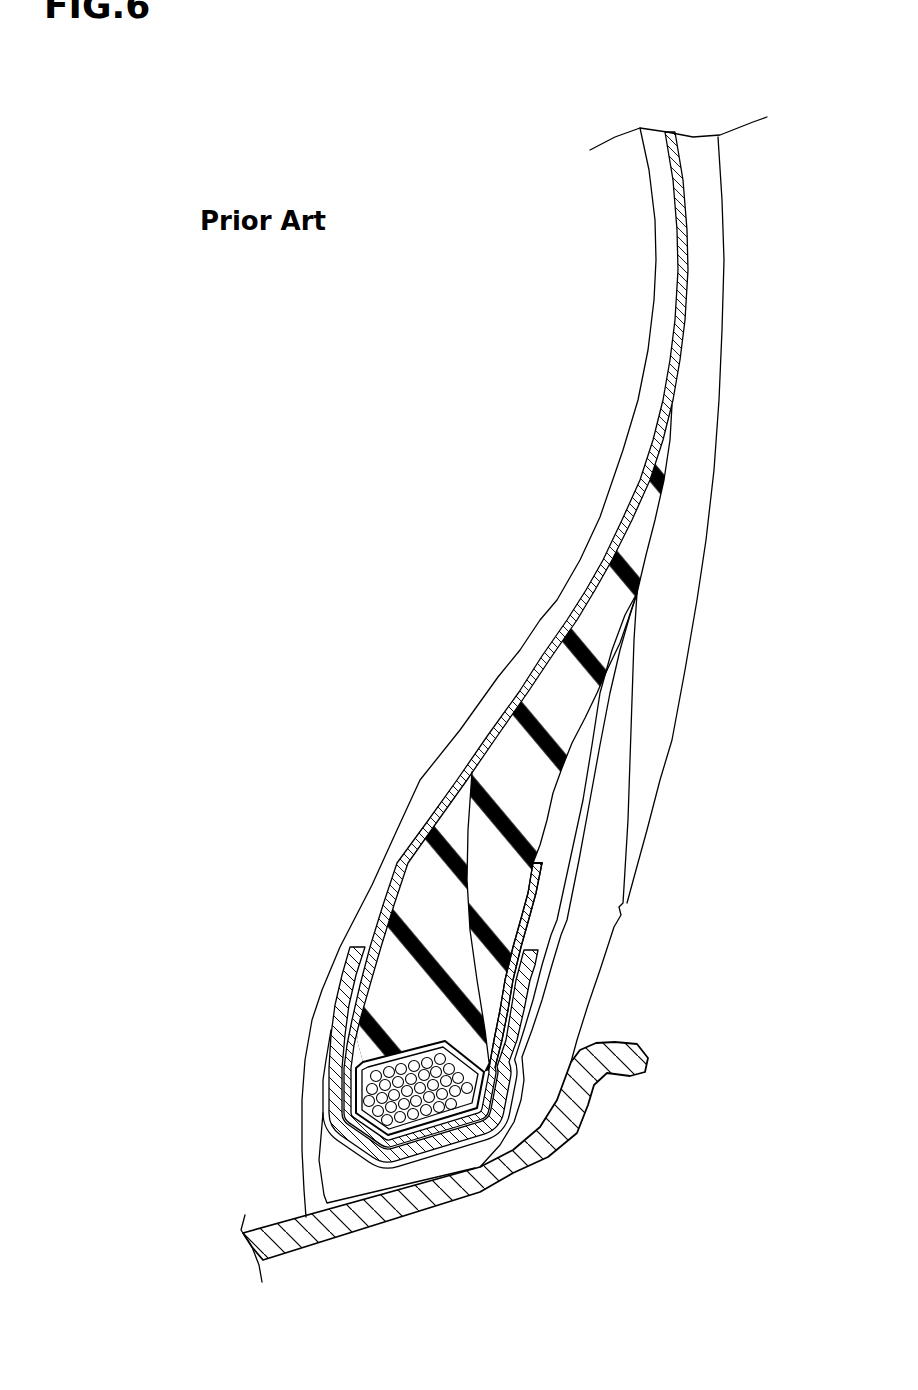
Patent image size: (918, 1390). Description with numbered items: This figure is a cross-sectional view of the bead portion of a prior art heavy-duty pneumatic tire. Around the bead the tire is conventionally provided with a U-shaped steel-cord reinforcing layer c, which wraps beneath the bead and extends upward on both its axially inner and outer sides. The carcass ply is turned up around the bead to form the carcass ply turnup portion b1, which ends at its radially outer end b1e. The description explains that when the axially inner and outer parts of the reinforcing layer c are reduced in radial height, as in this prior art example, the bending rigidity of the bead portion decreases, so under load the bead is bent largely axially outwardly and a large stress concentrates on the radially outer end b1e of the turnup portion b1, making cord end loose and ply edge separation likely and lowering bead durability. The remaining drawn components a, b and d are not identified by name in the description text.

The bead core a is at (448, 1112).
The carcass ply b is at (520, 692).
The carcass ply turnup portion b1 is at (525, 898).
The radially outer end of the carcass ply turnup portion b1e is at (537, 864).
The U-shaped steel-cord reinforcing layer c is at (517, 1010).
The rim d is at (239, 1089).